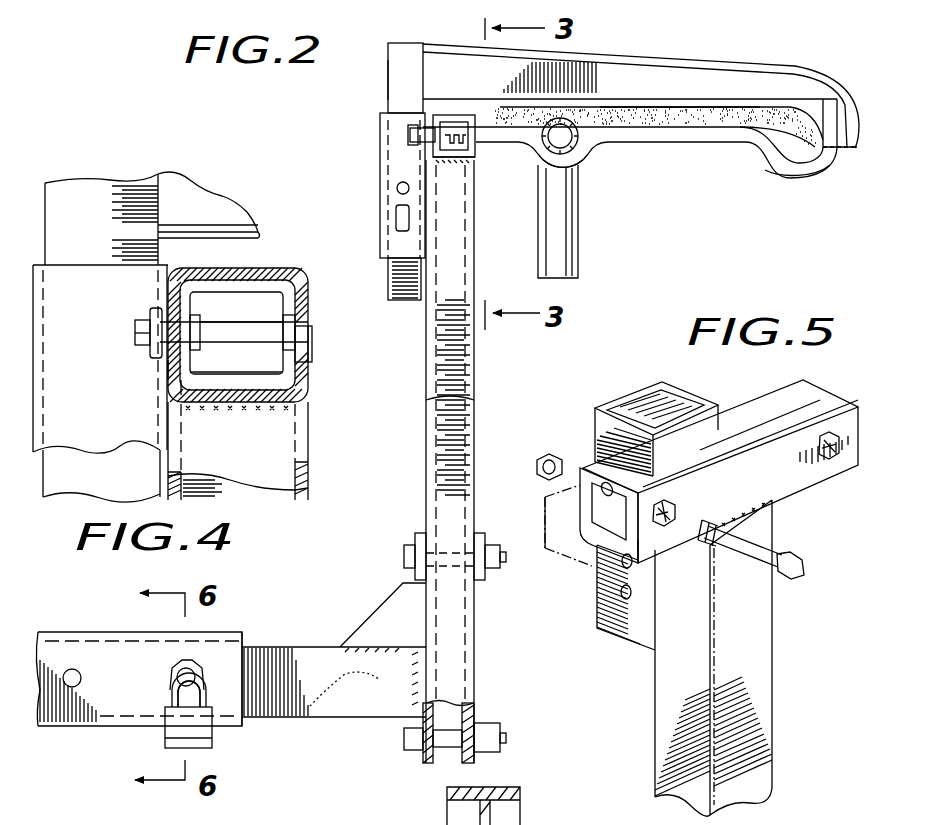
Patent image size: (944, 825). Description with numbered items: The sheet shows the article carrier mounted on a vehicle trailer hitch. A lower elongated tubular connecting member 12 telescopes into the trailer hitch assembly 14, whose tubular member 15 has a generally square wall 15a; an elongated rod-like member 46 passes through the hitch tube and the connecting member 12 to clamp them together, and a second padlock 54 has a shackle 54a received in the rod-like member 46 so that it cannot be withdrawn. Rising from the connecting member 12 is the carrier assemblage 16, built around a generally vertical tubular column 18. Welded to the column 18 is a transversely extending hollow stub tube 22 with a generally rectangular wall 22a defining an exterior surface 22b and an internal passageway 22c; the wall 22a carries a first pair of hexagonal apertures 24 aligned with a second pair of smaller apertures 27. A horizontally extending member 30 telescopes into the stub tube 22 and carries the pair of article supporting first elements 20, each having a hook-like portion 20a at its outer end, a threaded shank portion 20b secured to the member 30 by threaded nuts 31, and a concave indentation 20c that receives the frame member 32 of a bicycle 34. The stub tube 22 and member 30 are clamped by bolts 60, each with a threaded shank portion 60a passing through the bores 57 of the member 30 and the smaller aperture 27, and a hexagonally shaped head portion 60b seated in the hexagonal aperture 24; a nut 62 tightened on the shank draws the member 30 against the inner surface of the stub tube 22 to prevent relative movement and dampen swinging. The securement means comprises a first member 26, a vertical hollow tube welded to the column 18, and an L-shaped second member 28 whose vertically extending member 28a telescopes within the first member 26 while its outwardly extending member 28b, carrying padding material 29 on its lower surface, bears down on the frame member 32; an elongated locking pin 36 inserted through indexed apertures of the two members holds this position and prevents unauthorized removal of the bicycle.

In FIG. 2, the tubular connecting member 12 is at (344, 702).
In FIG. 2, the trailer hitch assembly 14 is at (114, 630).
In FIG. 2, the tubular member 15 is at (220, 632).
In FIG. 2, the wall 15a is at (72, 729).
In FIG. 2, the carrier assemblage 16 is at (482, 396).
In FIG. 4, the tubular column 18 is at (309, 458).
In FIG. 5, the tubular column 18 is at (760, 718).
In FIG. 2, the article supporting first elements 20 is at (705, 135).
In FIG. 2, the hook-like portion 20a is at (805, 168).
In FIG. 2, the threaded shank portion 20b is at (468, 158).
In FIG. 2, the concave indentations 20c is at (588, 166).
In FIG. 2, the hollow stub tube 22 is at (450, 122).
In FIG. 4, the hollow stub tube 22 is at (200, 410).
In FIG. 5, the hollow stub tube 22 is at (803, 398).
In FIG. 4, the wall 22a is at (172, 395).
In FIG. 5, the wall 22a is at (641, 531).
In FIG. 4, the exterior surface 22b is at (172, 371).
In FIG. 5, the exterior surface 22b is at (753, 410).
In FIG. 5, the internal passageway 22c is at (612, 530).
In FIG. 5, the first pair of apertures 24 is at (677, 510).
In FIG. 2, the first member 26 is at (379, 157).
In FIG. 4, the first member 26 is at (100, 383).
In FIG. 5, the first member 26 is at (631, 630).
In FIG. 4, the second pair of apertures 27 is at (150, 333).
In FIG. 5, the second pair of apertures 27 is at (611, 487).
In FIG. 2, the second member 28 is at (403, 52).
In FIG. 2, the vertically extending member 28a is at (398, 79).
In FIG. 2, the outwardly extending member 28b is at (658, 62).
In FIG. 2, the padding material 29 is at (651, 112).
In FIG. 4, the horizontally extending member 30 is at (245, 410).
In FIG. 2, the threaded nuts 31 is at (420, 127).
In FIG. 2, the frame member 32 is at (585, 140).
In FIG. 2, the bicycle 34 is at (580, 240).
In FIG. 2, the locking pin 36 is at (396, 210).
In FIG. 2, the rod-like member 46 is at (178, 673).
In FIG. 2, the second padlock 54 is at (168, 733).
In FIG. 2, the shackle 54a is at (172, 700).
In FIG. 4, the bores or apertures 57 is at (196, 331).
In FIG. 4, the bolts 60 is at (318, 355).
In FIG. 5, the bolts 60 is at (760, 560).
In FIG. 4, the threaded shank portion 60a is at (205, 345).
In FIG. 5, the threaded shank portion 60a is at (716, 530).
In FIG. 4, the hexagonally shaped head portion 60b is at (309, 362).
In FIG. 5, the hexagonally shaped head portion 60b is at (798, 578).
In FIG. 4, the nut 62 is at (152, 316).
In FIG. 5, the nut 62 is at (549, 454).